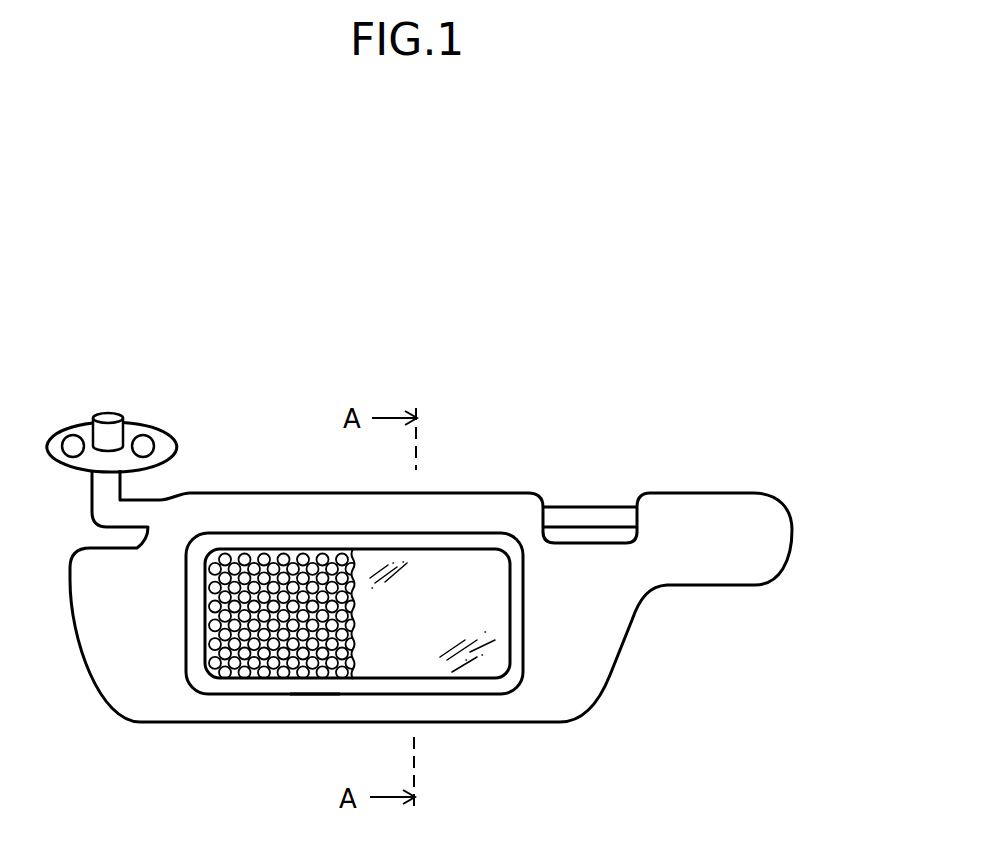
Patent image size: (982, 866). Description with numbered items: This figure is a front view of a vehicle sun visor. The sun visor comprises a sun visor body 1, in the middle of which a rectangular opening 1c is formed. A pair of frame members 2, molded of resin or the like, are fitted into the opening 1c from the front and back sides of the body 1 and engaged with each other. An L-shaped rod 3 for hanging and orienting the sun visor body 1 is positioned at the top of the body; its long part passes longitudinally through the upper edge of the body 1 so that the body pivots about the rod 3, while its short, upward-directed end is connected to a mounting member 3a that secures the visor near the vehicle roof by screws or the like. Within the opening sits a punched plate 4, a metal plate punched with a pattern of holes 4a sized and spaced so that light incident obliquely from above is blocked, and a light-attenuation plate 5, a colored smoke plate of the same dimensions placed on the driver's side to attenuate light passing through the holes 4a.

The sun visor body 1 is at (282, 507).
The opening 1c is at (297, 693).
The frame members 2 is at (207, 683).
The rod 3 is at (578, 513).
The mounting member 3a is at (158, 427).
The punched plate 4 is at (273, 669).
The holes 4a is at (205, 636).
The light-attenuation plate 5 is at (487, 662).